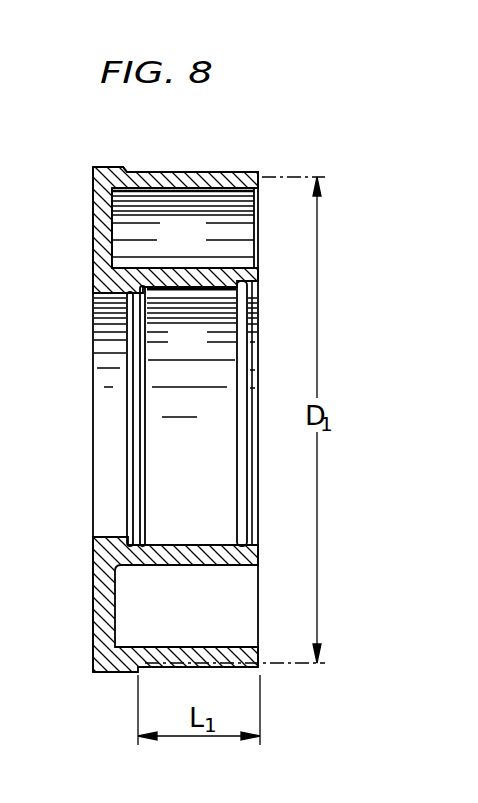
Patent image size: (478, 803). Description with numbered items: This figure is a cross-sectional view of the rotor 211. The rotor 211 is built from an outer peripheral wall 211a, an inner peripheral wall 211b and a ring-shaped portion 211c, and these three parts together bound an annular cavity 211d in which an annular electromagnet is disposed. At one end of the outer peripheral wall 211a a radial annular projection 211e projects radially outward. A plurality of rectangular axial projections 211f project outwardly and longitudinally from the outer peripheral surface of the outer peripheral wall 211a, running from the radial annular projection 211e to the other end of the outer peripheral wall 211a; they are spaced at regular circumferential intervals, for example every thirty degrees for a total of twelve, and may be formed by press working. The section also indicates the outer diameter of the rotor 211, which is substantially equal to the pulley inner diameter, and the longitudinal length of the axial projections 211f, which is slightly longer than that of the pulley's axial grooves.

The rotor 211 is at (93, 160).
The outer peripheral wall 211a is at (248, 178).
The inner peripheral wall 211b is at (187, 284).
The ring-shaped portion 211c is at (100, 231).
The annular cavity 211d is at (183, 228).
The radial annular projection 211e is at (110, 167).
The rectangular axial projections 211f is at (183, 172).